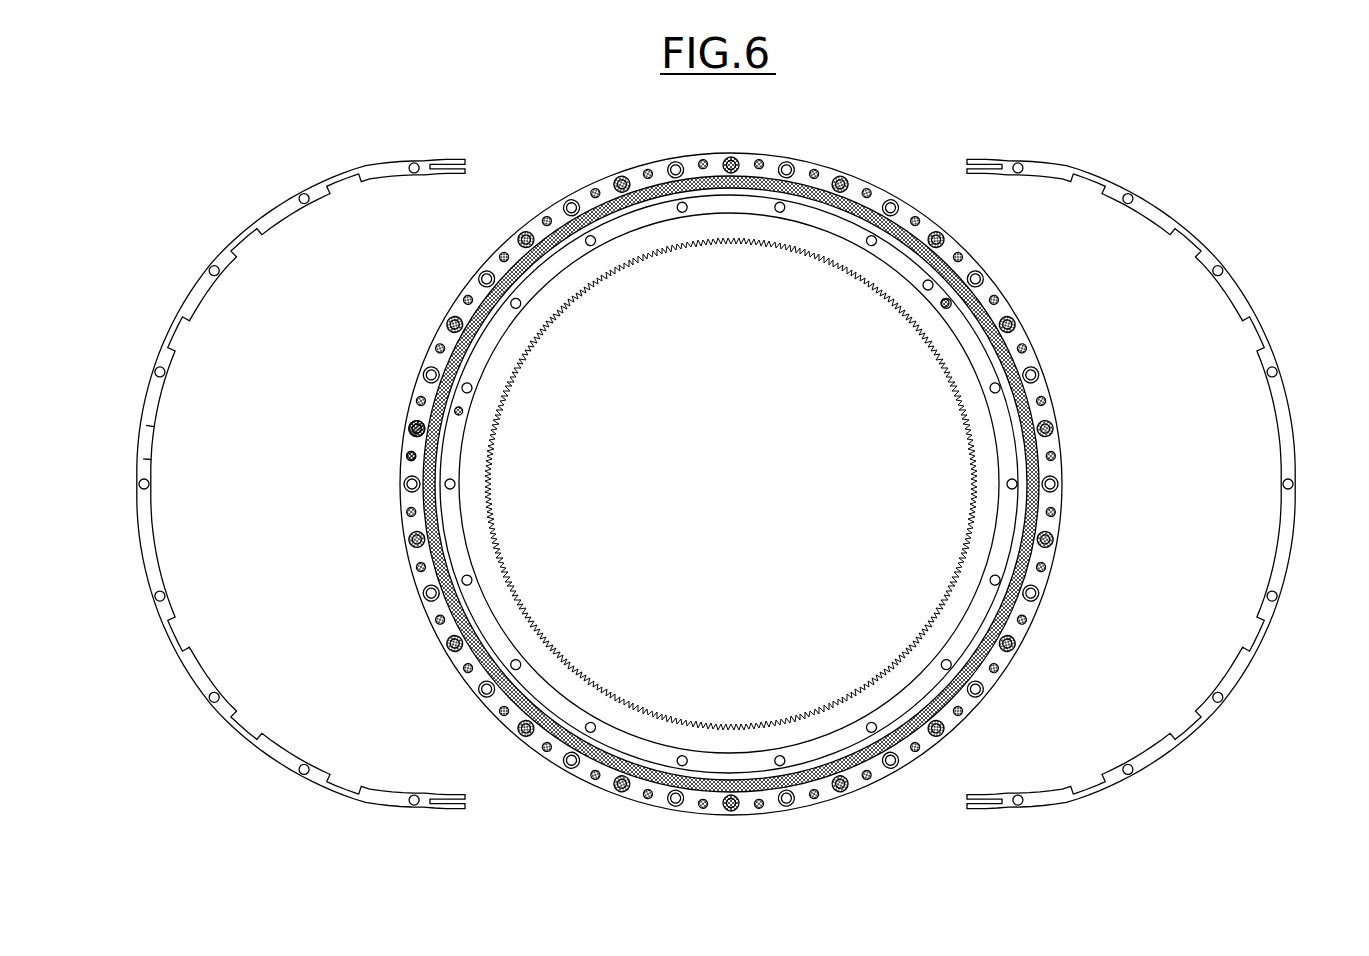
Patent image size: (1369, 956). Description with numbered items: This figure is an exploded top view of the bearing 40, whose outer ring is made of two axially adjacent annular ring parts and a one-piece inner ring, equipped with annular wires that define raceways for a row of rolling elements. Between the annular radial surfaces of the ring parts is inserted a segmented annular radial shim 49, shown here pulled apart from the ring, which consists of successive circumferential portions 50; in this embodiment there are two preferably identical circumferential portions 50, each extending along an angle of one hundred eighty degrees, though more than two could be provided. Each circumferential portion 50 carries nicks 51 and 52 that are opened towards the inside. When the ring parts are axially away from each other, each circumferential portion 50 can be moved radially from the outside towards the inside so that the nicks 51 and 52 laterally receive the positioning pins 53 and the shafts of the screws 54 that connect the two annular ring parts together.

The bearing 40 is at (709, 462).
The segmented annular radial shim 49 is at (293, 483).
The circumferential portion 50 is at (723, 483).
The nick 51 is at (160, 460).
The nick 52 is at (160, 427).
The positioning pin 53 is at (404, 457).
The screw 54 is at (404, 429).